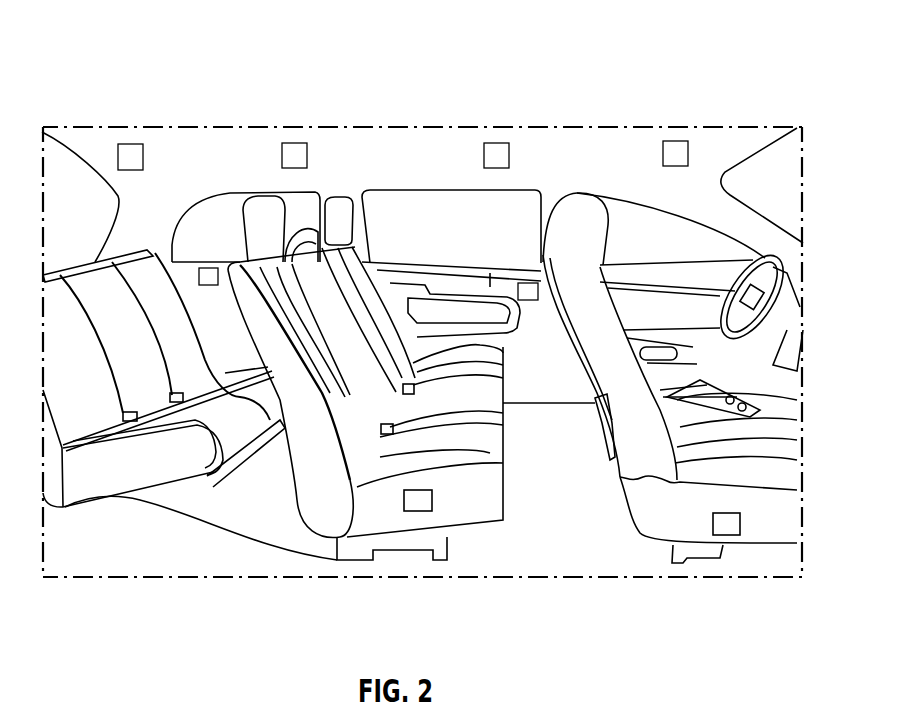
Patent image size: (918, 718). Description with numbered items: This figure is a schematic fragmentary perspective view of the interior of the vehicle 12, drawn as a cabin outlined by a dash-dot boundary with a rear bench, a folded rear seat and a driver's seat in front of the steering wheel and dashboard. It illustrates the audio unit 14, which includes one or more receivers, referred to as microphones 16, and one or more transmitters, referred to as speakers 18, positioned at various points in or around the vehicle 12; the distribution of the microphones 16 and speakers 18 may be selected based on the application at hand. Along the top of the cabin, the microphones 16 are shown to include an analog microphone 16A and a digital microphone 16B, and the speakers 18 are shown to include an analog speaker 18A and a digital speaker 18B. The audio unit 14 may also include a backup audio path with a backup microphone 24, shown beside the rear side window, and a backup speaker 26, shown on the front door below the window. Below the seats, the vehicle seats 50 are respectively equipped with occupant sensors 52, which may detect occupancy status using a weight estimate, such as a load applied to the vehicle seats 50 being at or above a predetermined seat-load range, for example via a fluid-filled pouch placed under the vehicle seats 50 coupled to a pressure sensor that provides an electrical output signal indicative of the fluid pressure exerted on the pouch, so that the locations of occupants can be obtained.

The vehicle 12 is at (232, 578).
The audio unit 14 is at (183, 62).
The microphones 16 is at (453, 94).
The analog microphone 16A is at (295, 122).
The digital microphone 16B is at (675, 120).
The speakers 18 is at (280, 104).
The analog speaker 18A is at (492, 122).
The digital speaker 18B is at (128, 125).
The backup microphone 24 is at (203, 257).
The backup speaker 26 is at (522, 272).
The vehicle seats 50 is at (620, 240).
The occupant sensors 52 is at (433, 502).